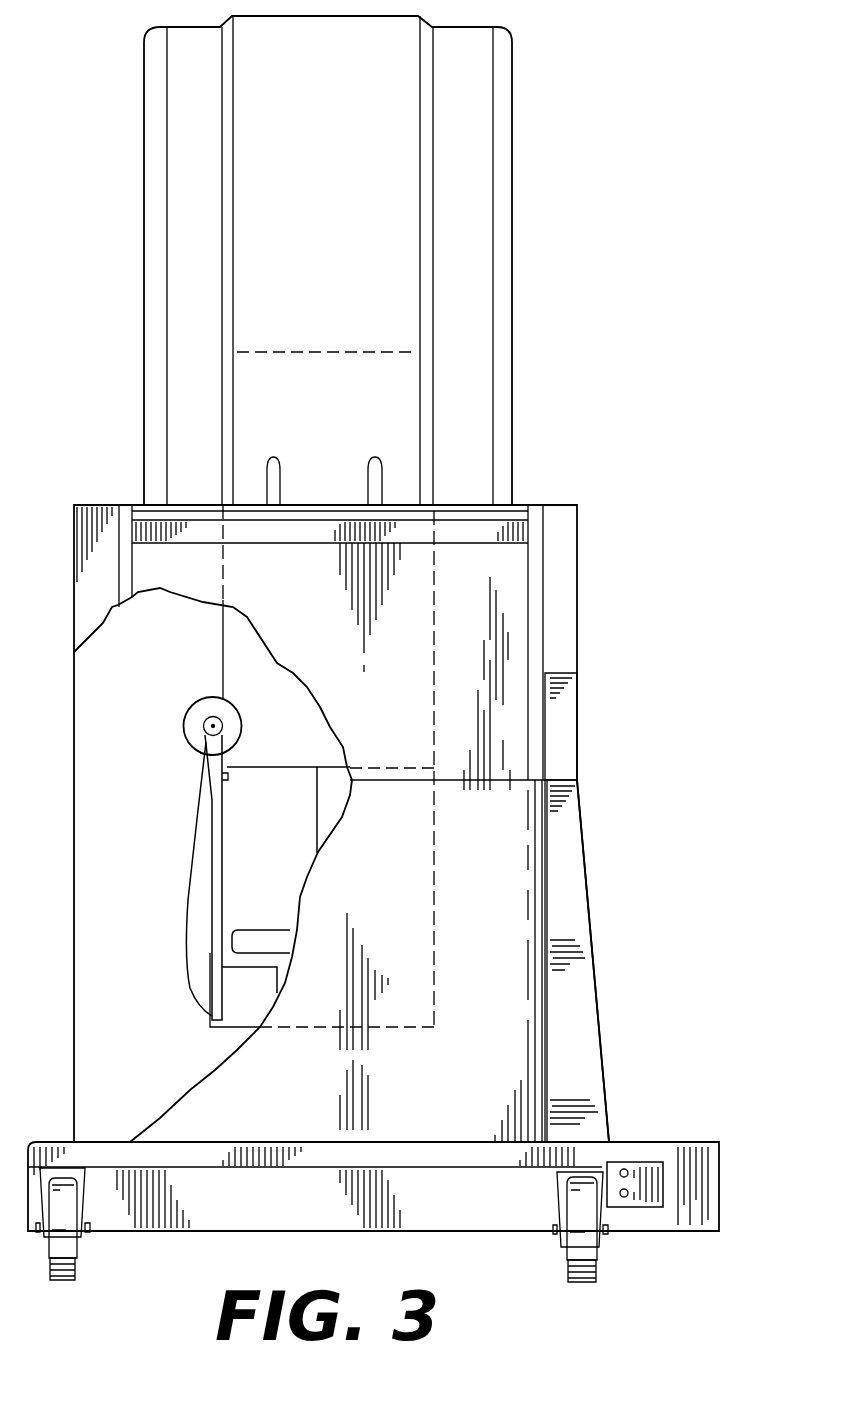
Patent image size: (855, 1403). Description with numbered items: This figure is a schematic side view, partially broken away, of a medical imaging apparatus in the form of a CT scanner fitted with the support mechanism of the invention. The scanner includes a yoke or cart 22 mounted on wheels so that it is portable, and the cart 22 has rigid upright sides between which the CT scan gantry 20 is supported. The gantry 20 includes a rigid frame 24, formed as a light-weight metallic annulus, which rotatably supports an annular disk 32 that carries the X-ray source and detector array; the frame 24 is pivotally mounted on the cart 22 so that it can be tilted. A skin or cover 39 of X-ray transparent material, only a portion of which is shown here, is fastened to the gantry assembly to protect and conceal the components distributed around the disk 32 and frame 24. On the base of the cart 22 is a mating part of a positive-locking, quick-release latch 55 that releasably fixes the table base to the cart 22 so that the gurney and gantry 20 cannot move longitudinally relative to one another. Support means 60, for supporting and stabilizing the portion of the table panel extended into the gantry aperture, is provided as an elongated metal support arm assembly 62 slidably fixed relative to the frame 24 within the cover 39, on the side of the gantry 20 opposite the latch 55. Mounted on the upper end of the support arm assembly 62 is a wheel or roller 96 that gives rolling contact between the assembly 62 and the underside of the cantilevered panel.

The CT scan gantry 20 is at (590, 860).
The cart 22 is at (582, 984).
The frame 24 is at (248, 977).
The annular disk 32 is at (317, 813).
The cover 39 is at (408, 643).
The latch 55 is at (687, 1157).
The support means 60 is at (182, 960).
The support arm assembly 62 is at (201, 803).
The roller 96 is at (186, 727).